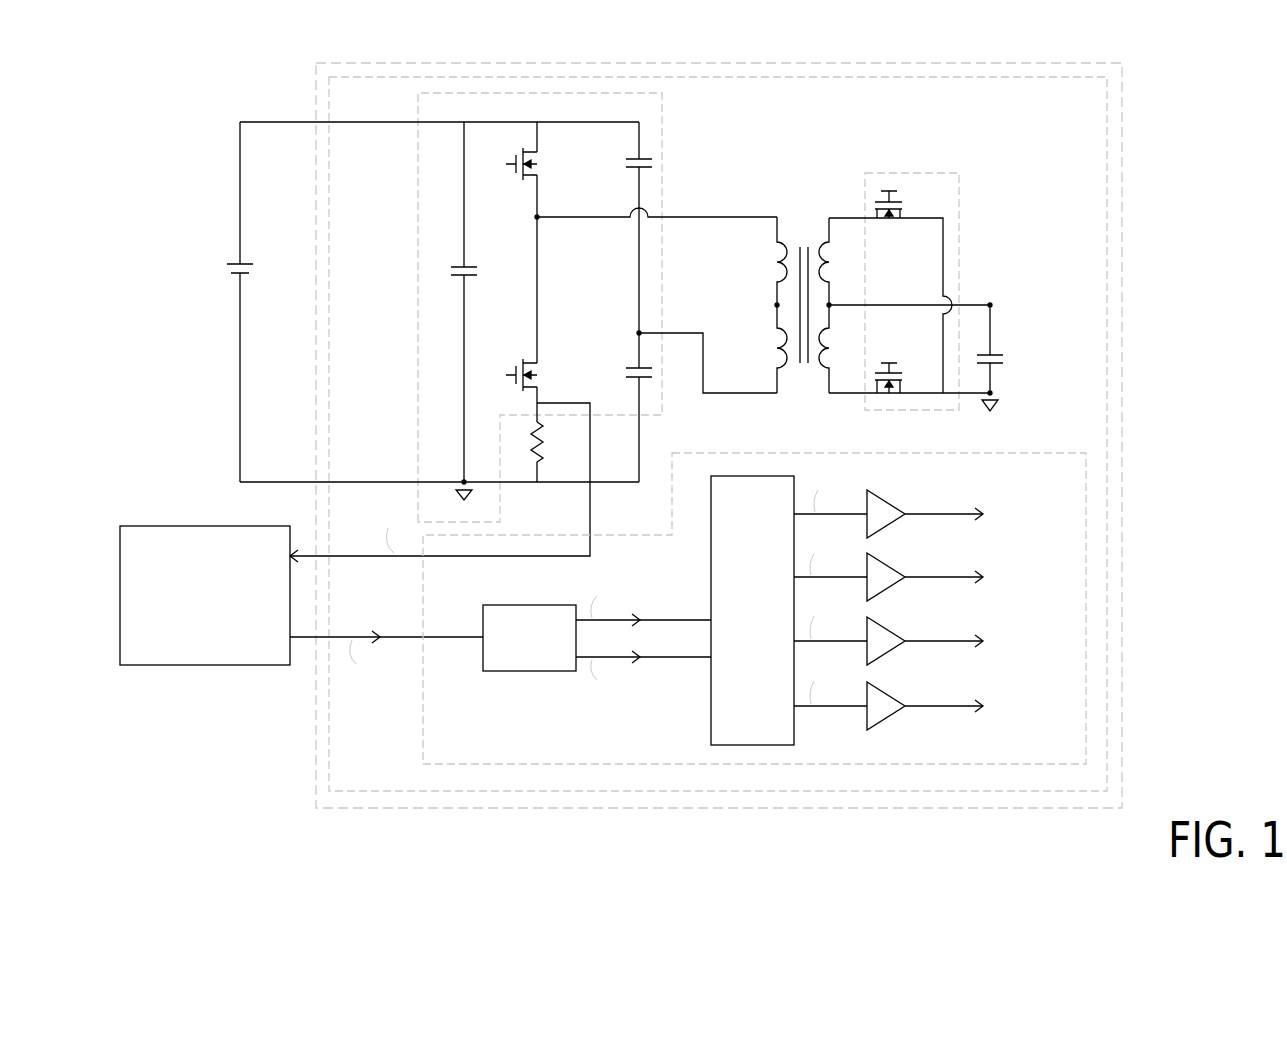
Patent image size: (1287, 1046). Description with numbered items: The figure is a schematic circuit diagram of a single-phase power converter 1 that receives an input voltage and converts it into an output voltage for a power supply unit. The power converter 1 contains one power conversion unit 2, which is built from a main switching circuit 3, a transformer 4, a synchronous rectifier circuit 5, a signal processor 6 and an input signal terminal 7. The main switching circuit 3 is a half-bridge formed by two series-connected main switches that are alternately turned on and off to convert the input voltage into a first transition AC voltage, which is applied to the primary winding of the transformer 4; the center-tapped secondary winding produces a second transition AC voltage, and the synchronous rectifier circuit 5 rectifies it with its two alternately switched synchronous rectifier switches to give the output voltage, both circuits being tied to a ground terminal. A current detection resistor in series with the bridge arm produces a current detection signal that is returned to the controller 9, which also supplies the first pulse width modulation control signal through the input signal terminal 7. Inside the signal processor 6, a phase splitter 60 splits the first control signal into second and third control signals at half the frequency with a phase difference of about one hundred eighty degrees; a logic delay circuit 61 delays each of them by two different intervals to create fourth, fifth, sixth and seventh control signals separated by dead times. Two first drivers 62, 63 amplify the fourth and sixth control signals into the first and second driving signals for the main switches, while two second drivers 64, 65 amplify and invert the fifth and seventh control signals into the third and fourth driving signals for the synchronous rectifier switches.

The power converter 1 is at (1124, 114).
The power conversion unit 2 is at (1107, 174).
The main switching circuit 3 is at (665, 122).
The transformer 4 is at (800, 222).
The synchronous rectifier circuit 5 is at (960, 190).
The signal processor 6 is at (1050, 453).
The input signal terminal 7 is at (430, 633).
The controller 9 is at (150, 527).
The phase splitter 60 is at (502, 606).
The logic delay circuit 61 is at (751, 476).
The first driver 62 is at (884, 501).
The first driver 63 is at (884, 628).
The second driver 64 is at (882, 564).
The second driver 65 is at (882, 693).